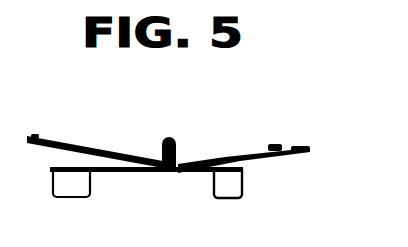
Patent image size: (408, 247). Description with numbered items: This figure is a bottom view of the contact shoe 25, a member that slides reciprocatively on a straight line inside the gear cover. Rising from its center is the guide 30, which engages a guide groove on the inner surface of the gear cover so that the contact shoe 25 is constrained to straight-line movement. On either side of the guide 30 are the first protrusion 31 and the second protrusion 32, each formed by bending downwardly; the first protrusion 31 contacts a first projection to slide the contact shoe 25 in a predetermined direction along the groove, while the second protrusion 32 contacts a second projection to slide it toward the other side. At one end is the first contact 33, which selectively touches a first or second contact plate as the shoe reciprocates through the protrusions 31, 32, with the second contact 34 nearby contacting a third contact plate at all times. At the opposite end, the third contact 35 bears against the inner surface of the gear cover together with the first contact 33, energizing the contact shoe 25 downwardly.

The contact shoe 25 is at (187, 128).
The guide 30 is at (163, 149).
The first protrusion 31 is at (63, 191).
The second protrusion 32 is at (236, 188).
The first contact 33 is at (292, 156).
The second contact 34 is at (253, 149).
The third contact 35 is at (40, 136).